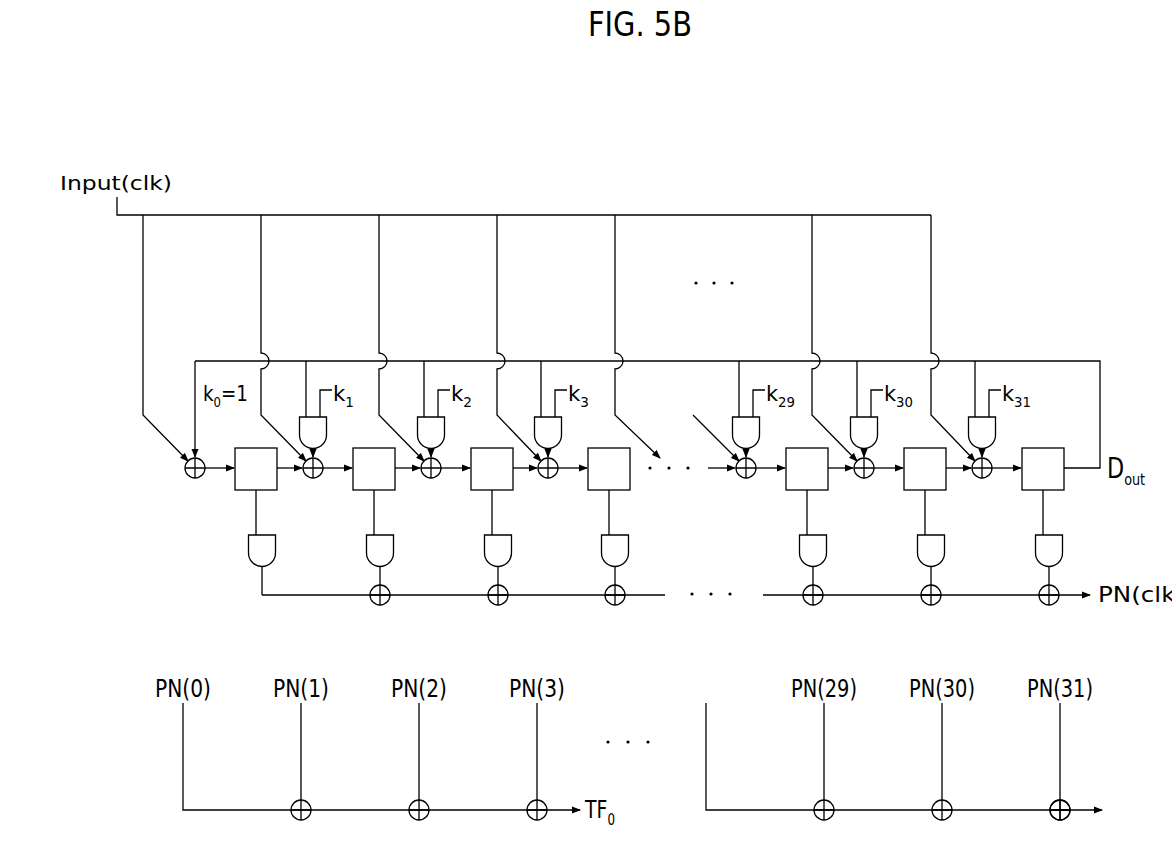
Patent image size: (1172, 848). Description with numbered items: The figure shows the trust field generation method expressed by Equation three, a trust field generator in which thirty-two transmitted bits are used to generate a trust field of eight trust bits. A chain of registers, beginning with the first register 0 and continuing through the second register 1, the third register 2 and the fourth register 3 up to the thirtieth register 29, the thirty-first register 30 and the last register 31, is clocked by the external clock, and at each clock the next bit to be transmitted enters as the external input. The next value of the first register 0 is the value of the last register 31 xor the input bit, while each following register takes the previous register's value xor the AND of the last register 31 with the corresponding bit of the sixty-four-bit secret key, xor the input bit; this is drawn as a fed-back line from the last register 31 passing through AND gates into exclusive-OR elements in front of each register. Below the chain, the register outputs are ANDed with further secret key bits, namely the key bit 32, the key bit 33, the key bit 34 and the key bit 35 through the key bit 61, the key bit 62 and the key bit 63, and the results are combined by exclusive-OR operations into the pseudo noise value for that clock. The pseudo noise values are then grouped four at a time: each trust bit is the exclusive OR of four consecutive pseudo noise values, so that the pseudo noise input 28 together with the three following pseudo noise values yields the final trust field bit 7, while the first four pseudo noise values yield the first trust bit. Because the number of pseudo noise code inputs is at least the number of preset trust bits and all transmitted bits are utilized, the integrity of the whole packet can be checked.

The register D0 0 is at (256, 469).
The register D1 1 is at (374, 469).
The register D2 2 is at (492, 469).
The register D3 3 is at (609, 469).
The register D29 29 is at (807, 469).
The register D30 30 is at (925, 469).
The register D31 31 is at (1043, 469).
The secret key bit k32 32 is at (269, 535).
The secret key bit k33 33 is at (387, 535).
The secret key bit k34 34 is at (505, 535).
The secret key bit k35 35 is at (622, 535).
The secret key bit k61 61 is at (820, 535).
The secret key bit k62 62 is at (938, 535).
The secret key bit k63 63 is at (1056, 535).
The PN code input PN 28 is at (887, 742).
The trust field bit TF7 7 is at (1093, 812).